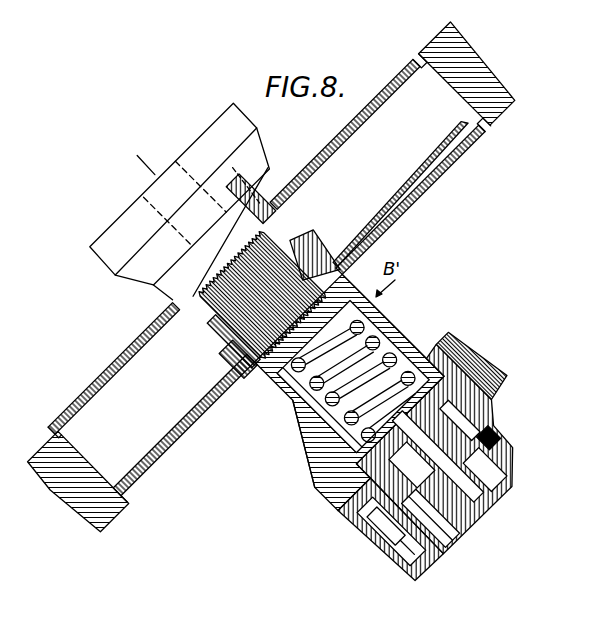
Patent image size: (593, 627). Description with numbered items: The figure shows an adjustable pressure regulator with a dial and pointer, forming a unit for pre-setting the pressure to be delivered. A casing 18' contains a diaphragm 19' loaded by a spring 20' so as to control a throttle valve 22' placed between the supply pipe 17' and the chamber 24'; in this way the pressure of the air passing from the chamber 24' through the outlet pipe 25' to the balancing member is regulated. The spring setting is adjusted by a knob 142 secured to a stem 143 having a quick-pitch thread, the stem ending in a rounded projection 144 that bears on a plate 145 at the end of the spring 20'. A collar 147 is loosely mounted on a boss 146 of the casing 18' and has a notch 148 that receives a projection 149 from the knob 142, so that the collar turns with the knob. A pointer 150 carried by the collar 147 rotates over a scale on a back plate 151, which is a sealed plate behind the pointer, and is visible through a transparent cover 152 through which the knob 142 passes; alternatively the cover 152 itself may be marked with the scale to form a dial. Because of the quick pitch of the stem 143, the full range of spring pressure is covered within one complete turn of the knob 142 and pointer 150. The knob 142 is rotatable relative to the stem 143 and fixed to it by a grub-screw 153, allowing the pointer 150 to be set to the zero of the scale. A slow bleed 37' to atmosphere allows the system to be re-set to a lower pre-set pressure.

The knob 142 is at (217, 132).
The grub-screw 153 is at (262, 192).
The pointer 150 is at (415, 167).
The collar 147 is at (323, 258).
The boss 146 is at (307, 277).
The rounded projection 144 is at (340, 297).
The spring 20' is at (359, 373).
The diaphragm 19' is at (432, 423).
The chamber 24' is at (458, 358).
The supply pipe 17' is at (505, 414).
The throttle valve 22' is at (474, 413).
The outlet pipe 25' is at (453, 526).
The slow bleed 37' is at (376, 543).
The casing 18' is at (296, 448).
The plate 145 is at (303, 392).
The notch 148 is at (238, 348).
The projection 149 is at (214, 336).
The stem 143 is at (211, 322).
The transparent cover 152 is at (151, 336).
The back plate 151 is at (186, 423).